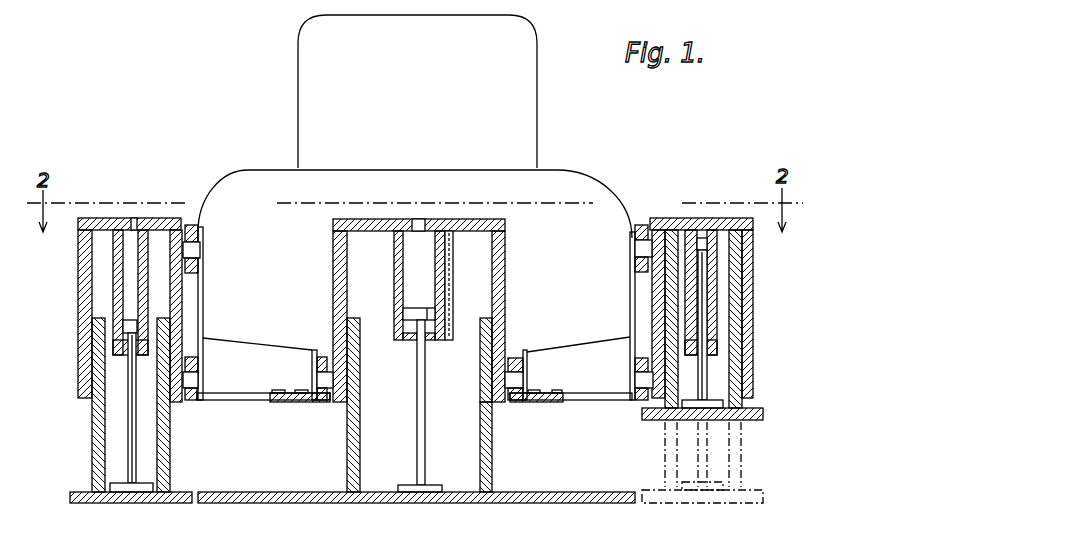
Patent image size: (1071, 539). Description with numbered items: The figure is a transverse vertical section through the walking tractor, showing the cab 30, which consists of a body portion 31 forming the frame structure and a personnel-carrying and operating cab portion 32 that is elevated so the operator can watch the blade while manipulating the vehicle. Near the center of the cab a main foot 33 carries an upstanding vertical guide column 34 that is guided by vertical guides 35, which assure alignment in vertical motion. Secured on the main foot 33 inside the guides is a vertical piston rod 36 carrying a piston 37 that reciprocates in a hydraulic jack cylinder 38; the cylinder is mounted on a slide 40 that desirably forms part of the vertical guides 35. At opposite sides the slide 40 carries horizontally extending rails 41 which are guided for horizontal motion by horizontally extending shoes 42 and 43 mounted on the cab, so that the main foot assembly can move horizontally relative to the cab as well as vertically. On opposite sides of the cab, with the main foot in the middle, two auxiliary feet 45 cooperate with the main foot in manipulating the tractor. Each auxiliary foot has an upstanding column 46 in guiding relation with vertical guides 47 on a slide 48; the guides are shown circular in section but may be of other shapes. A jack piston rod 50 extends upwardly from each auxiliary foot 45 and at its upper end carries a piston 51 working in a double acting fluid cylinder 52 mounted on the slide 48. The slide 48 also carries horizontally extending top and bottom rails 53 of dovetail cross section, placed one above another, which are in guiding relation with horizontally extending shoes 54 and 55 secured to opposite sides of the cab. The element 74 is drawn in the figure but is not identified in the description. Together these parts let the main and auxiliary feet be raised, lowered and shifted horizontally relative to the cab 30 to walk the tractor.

The cab 30 is at (597, 205).
The body portion 31 is at (553, 181).
The cab portion 32 is at (536, 84).
The main foot 33 is at (550, 502).
The vertical guide column 34 is at (490, 447).
The vertical guides 35 is at (493, 327).
The vertical piston rod 36 is at (413, 433).
The piston 37 is at (412, 315).
The hydraulic jack cylinder 38 is at (428, 282).
The slide 40 is at (495, 270).
The rails 41 is at (515, 357).
The shoe 42 is at (320, 403).
The shoe 43 is at (323, 357).
The auxiliary feet 45 is at (130, 503).
The column 46 is at (167, 445).
The vertical guides 47 is at (172, 333).
The slide 48 is at (180, 292).
The jack piston rod 50 is at (128, 428).
The piston 51 is at (128, 330).
The double acting fluid cylinder 52 is at (117, 277).
The top and bottom rails 53 is at (192, 248).
The shoe 54 is at (197, 225).
The shoe 55 is at (197, 270).
The core member 74 is at (447, 228).